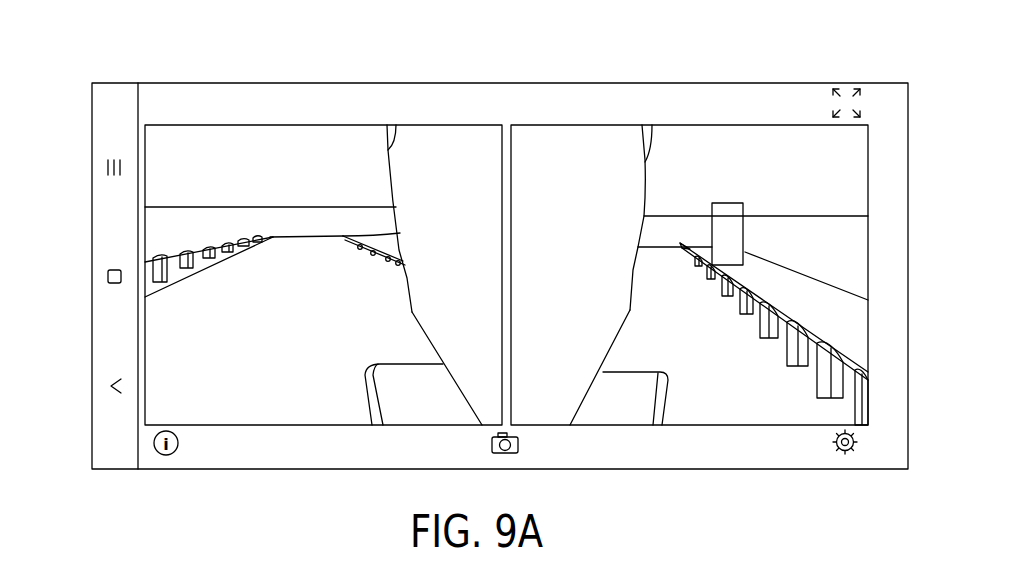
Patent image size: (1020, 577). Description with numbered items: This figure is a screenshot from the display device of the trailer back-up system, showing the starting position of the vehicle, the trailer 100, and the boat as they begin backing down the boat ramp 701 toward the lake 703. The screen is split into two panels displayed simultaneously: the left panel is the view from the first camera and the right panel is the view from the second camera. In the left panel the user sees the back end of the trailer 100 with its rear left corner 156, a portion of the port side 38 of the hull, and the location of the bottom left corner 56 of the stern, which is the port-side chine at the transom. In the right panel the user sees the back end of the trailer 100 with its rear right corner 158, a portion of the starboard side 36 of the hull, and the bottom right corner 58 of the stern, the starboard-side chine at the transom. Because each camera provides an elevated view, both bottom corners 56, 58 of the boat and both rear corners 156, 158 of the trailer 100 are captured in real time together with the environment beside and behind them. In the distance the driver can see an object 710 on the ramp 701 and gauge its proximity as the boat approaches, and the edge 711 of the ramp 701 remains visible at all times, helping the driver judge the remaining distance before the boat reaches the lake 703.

The starboard side 36 is at (630, 275).
The port side 38 is at (416, 275).
The bottom left corner 56 is at (410, 312).
The bottom right corner 58 is at (630, 311).
The trailer 100 is at (519, 379).
The rear left corner 156 is at (365, 363).
The rear right corner 158 is at (665, 372).
The boat ramp 701 is at (222, 286).
The lake 703 is at (210, 220).
The object 710 is at (727, 203).
The edge 711 is at (306, 235).